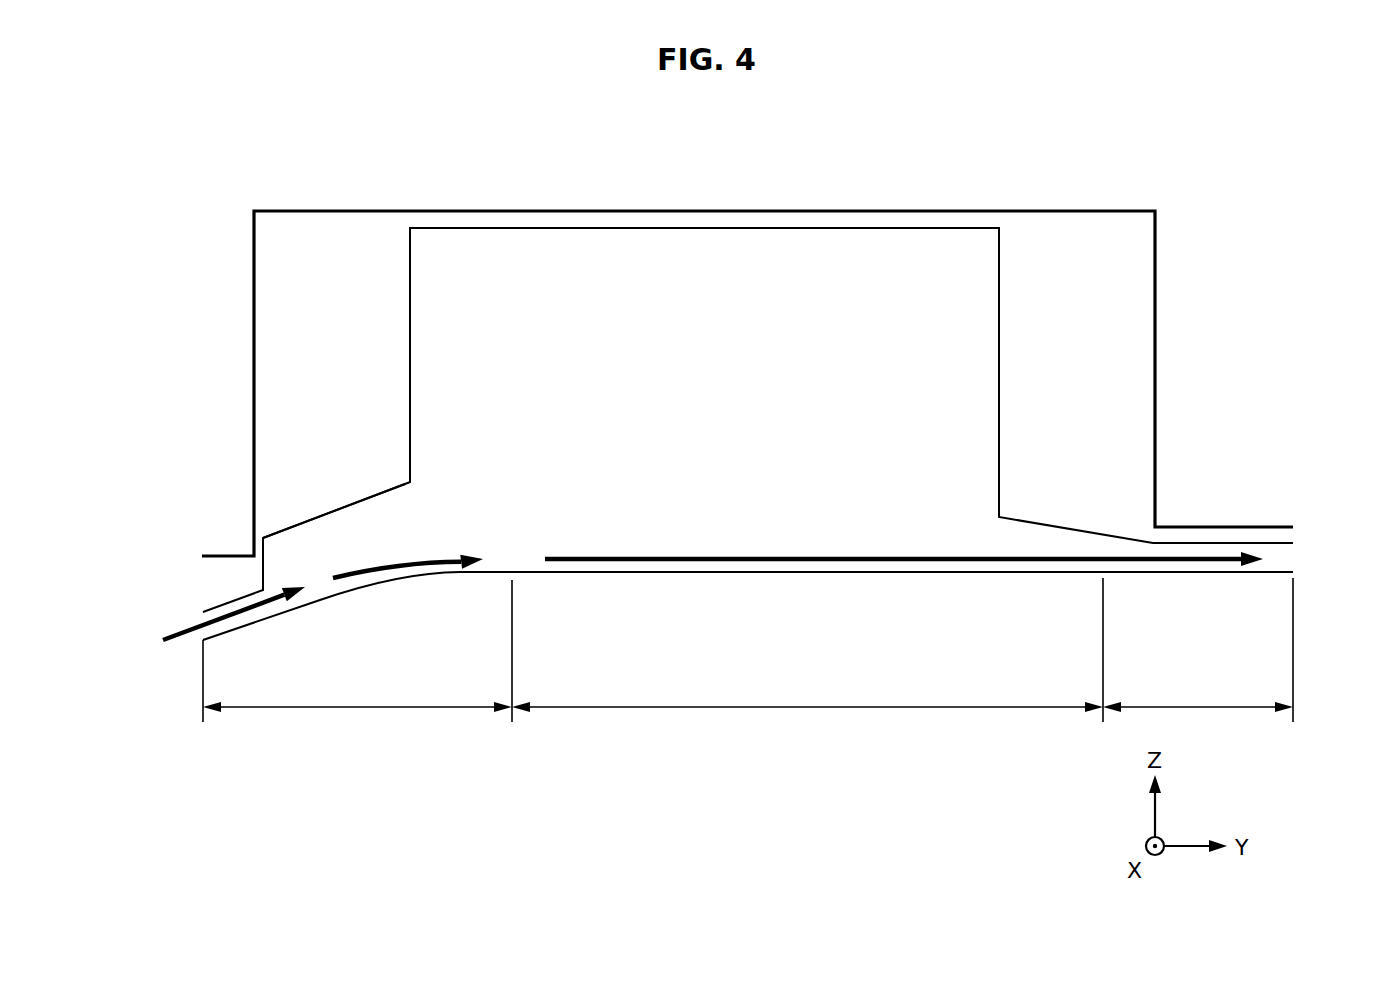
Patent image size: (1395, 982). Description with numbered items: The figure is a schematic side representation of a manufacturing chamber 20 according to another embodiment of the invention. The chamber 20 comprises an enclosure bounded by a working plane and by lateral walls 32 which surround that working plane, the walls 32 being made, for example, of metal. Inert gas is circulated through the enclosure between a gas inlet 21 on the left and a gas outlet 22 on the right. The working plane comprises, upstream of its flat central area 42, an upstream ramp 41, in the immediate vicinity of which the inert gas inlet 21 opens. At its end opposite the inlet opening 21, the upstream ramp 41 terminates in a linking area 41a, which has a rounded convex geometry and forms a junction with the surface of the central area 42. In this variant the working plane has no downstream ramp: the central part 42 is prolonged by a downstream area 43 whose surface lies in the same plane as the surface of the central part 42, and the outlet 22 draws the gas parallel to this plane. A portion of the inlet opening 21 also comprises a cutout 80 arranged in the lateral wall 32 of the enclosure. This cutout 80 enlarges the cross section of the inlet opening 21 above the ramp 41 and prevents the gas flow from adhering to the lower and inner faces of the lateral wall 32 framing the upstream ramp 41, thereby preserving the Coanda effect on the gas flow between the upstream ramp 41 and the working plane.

The manufacturing chamber 20 is at (514, 140).
The gas inlet 21 is at (190, 617).
The gas outlet 22 is at (1308, 558).
The lateral wall 32 is at (347, 379).
The upstream ramp 41 is at (357, 695).
The linking area 41a is at (392, 572).
The central area 42 is at (807, 695).
The downstream area 43 is at (1198, 695).
The cutout 80 is at (364, 487).